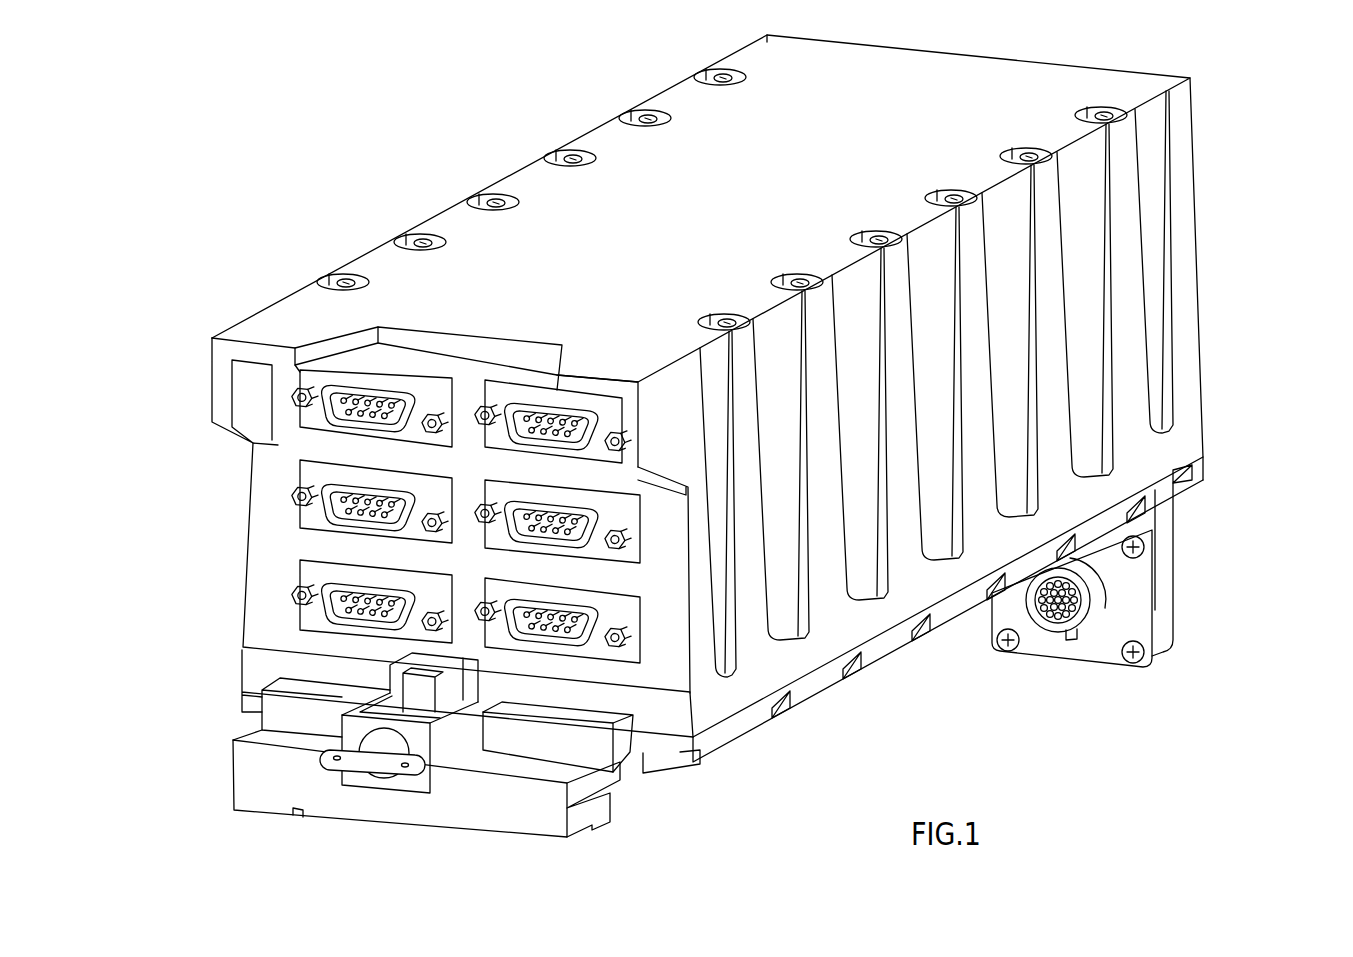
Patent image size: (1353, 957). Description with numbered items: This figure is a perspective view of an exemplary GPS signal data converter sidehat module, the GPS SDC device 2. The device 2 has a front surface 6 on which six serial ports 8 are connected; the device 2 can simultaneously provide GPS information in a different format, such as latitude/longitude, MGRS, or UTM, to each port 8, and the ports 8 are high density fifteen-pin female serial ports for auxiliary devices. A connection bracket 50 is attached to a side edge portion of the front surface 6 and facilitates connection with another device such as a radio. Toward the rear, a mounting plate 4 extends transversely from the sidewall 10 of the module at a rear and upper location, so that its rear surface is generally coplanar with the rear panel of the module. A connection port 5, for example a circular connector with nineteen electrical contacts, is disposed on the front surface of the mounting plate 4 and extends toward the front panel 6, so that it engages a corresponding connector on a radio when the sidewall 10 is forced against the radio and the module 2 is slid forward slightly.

The GPS SDC device 2 is at (1238, 190).
The mounting plate 4 is at (1140, 598).
The connection port 5 is at (1080, 638).
The front surface 6 is at (682, 633).
The serial ports 8 is at (308, 423).
The sidewall 10 is at (817, 703).
The connection bracket 50 is at (532, 813).